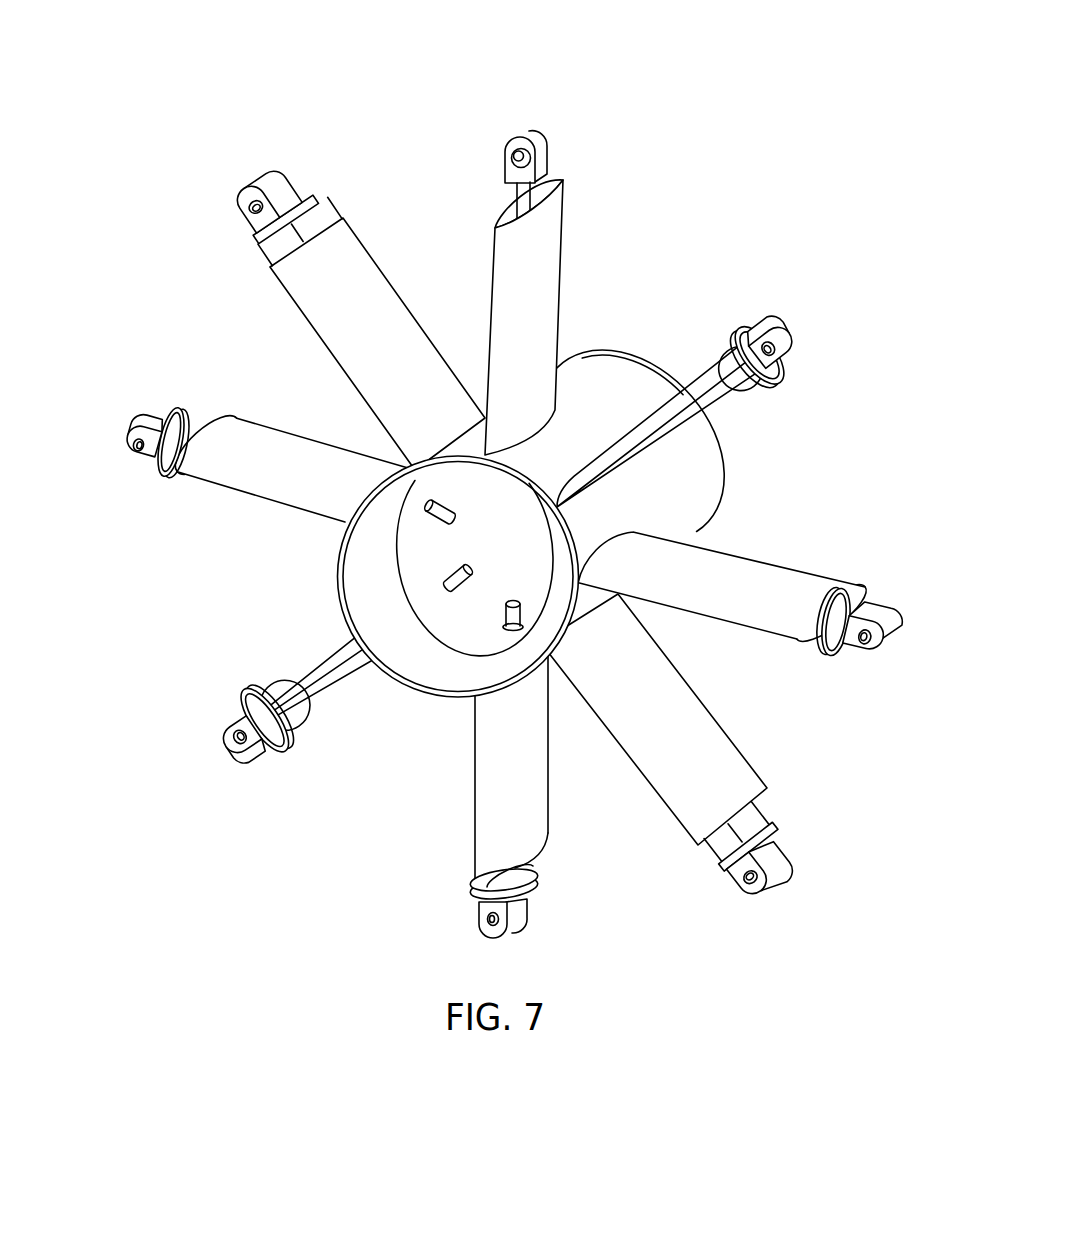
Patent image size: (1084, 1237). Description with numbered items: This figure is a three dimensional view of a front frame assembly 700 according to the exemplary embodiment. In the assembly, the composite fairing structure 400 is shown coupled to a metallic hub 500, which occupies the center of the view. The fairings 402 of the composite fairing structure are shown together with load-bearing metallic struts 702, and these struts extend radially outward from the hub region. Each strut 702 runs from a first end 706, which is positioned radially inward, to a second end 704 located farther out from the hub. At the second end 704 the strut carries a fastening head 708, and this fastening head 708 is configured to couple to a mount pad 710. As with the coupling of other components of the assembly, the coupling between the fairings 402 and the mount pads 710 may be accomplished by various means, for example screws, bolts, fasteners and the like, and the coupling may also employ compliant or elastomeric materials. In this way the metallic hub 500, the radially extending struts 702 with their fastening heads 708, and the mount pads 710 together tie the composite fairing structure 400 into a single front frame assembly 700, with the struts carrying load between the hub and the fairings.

The front frame assembly 700 is at (403, 86).
The composite fairing structure 400 is at (698, 462).
The fairings 402 is at (553, 273).
The metallic hub 500 is at (340, 578).
The load-bearing metallic struts 702 is at (513, 191).
The second end 704 is at (531, 133).
The first end 706 is at (476, 581).
The fastening head 708 is at (268, 178).
The mount pad 710 is at (312, 206).